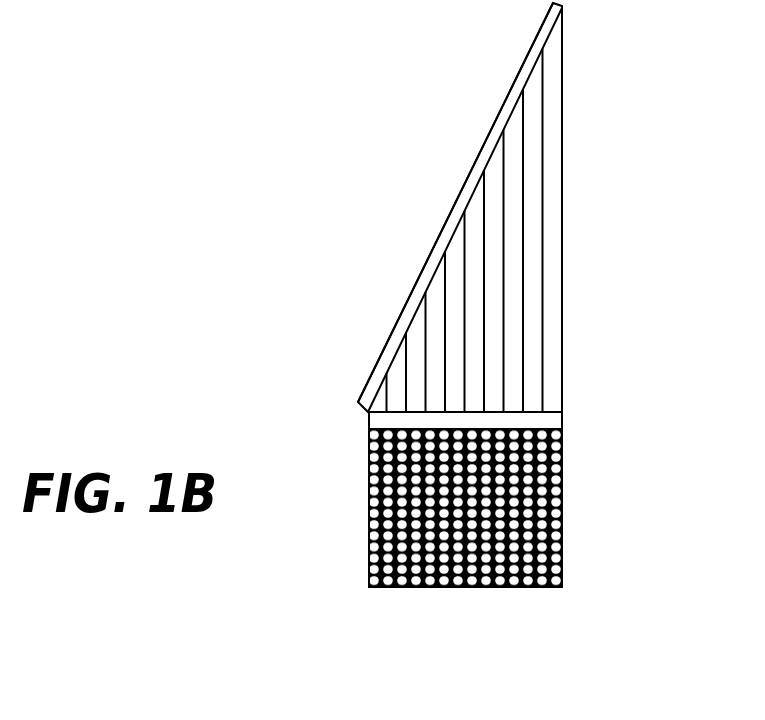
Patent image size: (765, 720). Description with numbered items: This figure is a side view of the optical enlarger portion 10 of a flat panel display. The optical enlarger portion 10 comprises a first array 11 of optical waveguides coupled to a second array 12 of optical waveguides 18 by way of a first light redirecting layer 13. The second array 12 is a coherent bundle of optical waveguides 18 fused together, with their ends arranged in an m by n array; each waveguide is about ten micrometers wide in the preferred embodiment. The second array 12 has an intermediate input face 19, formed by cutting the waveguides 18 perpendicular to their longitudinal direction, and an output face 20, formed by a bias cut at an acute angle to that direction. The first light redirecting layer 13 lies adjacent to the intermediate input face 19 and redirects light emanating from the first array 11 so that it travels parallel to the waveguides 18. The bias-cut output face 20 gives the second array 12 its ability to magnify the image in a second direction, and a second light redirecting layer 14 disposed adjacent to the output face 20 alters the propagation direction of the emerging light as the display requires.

The optical enlarger portion 10 is at (473, 329).
The first array 11 is at (568, 471).
The second array 12 is at (562, 170).
The first light redirecting layer 13 is at (561, 417).
The second light redirecting layer 14 is at (511, 100).
The optical waveguides 18 is at (555, 333).
The intermediate input face 19 is at (394, 418).
The output face 20 is at (462, 207).